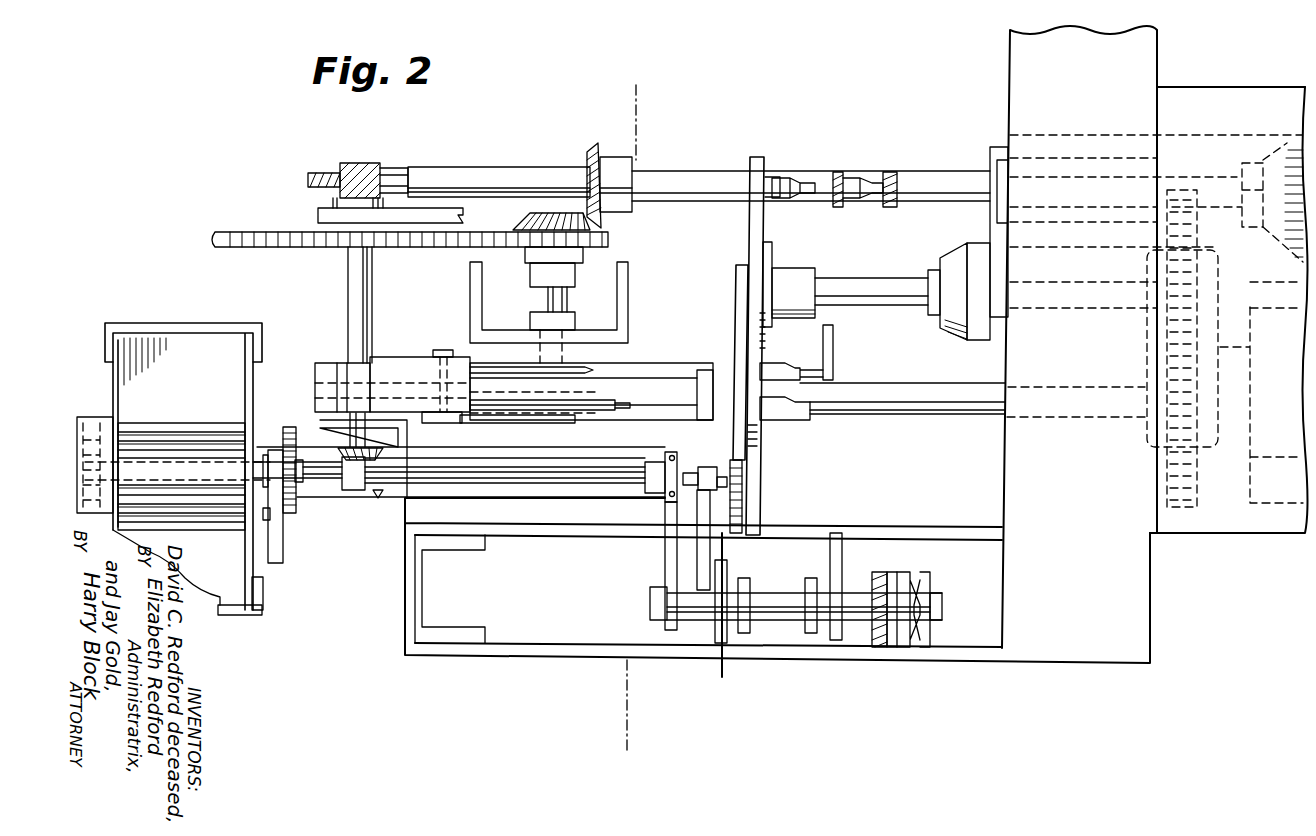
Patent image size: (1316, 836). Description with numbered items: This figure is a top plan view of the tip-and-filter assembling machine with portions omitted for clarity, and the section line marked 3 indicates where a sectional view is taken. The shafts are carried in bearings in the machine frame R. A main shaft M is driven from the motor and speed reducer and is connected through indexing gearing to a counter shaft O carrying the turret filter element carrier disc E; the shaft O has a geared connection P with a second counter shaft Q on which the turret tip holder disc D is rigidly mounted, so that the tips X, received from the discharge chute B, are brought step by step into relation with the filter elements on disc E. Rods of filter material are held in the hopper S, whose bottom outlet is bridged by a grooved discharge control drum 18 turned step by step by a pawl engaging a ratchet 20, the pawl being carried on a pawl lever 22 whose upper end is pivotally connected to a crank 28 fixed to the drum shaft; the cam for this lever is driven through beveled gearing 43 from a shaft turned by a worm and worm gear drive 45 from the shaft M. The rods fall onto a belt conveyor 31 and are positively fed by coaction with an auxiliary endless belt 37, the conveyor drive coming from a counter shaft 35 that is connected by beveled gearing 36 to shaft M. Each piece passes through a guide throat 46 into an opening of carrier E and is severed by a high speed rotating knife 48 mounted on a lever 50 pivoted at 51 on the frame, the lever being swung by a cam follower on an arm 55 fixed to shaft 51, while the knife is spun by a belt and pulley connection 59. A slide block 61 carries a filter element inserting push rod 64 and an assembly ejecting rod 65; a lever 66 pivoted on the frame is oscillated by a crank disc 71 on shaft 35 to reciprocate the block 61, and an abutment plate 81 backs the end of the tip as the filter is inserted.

The worm and worm gear drive 45 is at (345, 170).
The main shaft M is at (500, 178).
The beveled gearing 36 is at (577, 216).
The cigar or cigarette tips X is at (859, 181).
The discharge chute B is at (895, 168).
The turret cigar or cigarette tip holder D is at (747, 224).
The turret filter element carrier disc E is at (733, 290).
The second counter shaft Q is at (882, 294).
The geared connection P is at (1200, 348).
The abutment plate 81 is at (833, 342).
The counter shaft O is at (952, 412).
The counter shaft 35 is at (548, 298).
The block 61 is at (410, 362).
The crank disc 71 is at (610, 388).
The filter element inserting push rod 64 is at (577, 365).
The lever 66 is at (473, 419).
The tip and filter element assembly ejecting rod 65 is at (607, 405).
The auxiliary endless belt 37 is at (543, 480).
The guide throat 46 is at (721, 470).
The beveled gearing 43 is at (340, 453).
The belt conveyor 31 is at (323, 473).
The ratchet 20 is at (288, 425).
The pawl lever 22 is at (283, 557).
The crank 28 is at (266, 517).
The hopper S is at (177, 352).
The discharge control drum 18 is at (165, 438).
The arm 55 is at (673, 564).
The pivot shaft 51 is at (657, 602).
The lever 50 is at (717, 568).
The belt and pulley connection 59 is at (888, 648).
The high speed rotating knife 48 is at (722, 665).
The machine frame R is at (1019, 655).
The section line 3- 3 is at (646, 711).